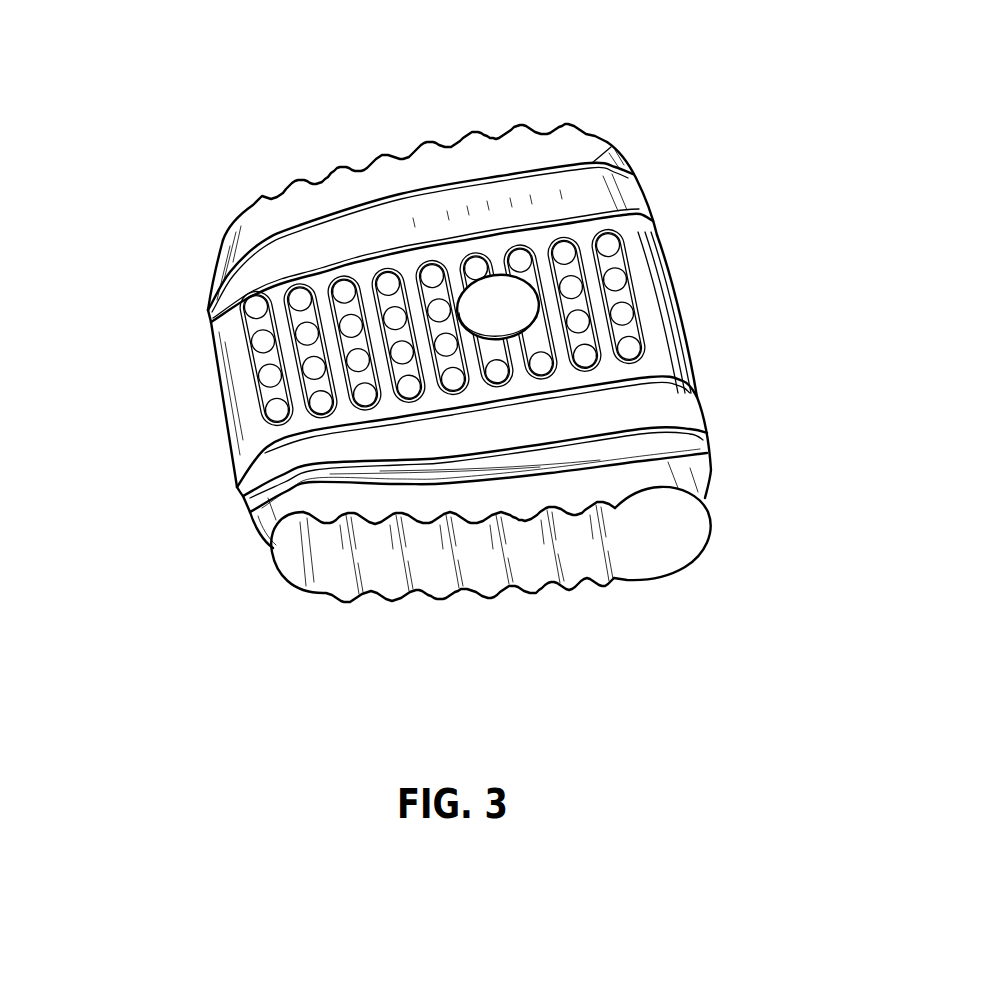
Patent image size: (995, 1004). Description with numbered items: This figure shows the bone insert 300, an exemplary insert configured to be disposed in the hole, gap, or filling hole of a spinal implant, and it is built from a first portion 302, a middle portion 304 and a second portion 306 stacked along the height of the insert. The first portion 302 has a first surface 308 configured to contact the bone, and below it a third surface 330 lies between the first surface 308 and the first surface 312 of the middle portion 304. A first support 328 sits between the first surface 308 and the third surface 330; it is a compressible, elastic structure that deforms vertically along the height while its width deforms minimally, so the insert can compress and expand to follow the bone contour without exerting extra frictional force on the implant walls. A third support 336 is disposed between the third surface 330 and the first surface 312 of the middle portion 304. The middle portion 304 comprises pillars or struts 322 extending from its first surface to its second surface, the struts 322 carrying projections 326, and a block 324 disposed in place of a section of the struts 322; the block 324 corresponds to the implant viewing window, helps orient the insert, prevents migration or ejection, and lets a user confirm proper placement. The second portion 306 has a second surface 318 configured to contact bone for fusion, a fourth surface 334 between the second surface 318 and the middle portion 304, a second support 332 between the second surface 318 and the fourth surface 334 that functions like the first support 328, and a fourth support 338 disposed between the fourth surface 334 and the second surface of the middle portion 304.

The bone insert 300 is at (123, 63).
The first portion 302 is at (693, 187).
The middle portion 304 is at (700, 303).
The second portion 306 is at (742, 458).
The first surface 308 is at (567, 143).
The first surface of the middle portion 312 is at (258, 271).
The second surface 318 is at (667, 550).
The struts 322 is at (252, 362).
The block 324 is at (530, 313).
The projections 326 is at (270, 407).
The first support 328 is at (613, 134).
The third surface 330 is at (631, 190).
The second support 332 is at (703, 473).
The fourth surface 334 is at (700, 447).
The third support 336 is at (648, 213).
The fourth support 338 is at (677, 418).